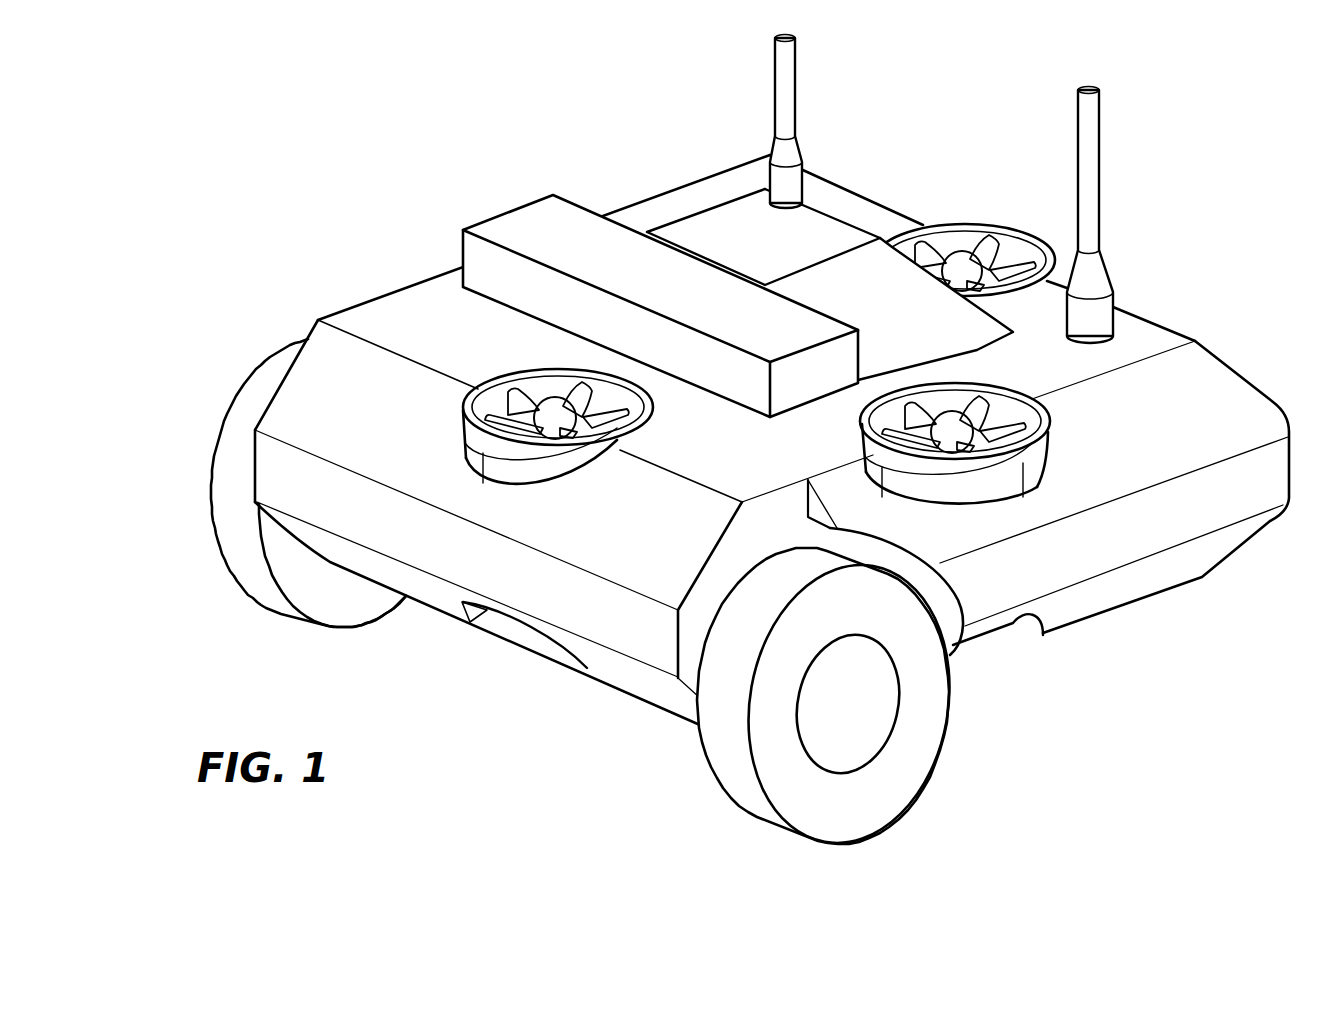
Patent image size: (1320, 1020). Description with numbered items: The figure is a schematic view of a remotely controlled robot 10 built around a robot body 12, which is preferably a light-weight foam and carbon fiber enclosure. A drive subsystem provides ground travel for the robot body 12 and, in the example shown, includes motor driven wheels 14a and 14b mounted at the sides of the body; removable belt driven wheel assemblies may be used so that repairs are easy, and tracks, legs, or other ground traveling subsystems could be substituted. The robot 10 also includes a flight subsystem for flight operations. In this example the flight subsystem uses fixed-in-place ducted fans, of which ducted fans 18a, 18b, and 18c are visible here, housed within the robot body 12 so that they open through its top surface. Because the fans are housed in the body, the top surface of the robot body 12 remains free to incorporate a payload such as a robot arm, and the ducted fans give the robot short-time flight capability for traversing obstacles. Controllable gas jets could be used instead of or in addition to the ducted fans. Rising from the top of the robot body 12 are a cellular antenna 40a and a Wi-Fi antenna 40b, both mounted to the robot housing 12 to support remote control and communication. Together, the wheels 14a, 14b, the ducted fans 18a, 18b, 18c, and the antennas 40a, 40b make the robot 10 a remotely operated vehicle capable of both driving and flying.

The remotely controlled robot 10 is at (710, 447).
The robot body 12 is at (1217, 377).
The motor driven wheel 14a is at (716, 757).
The motor driven wheel 14b is at (232, 527).
The ducted fan 18a is at (538, 388).
The ducted fan 18b is at (993, 402).
The ducted fan 18c is at (951, 240).
The cellular antenna 40a is at (783, 62).
The Wi-Fi antenna 40b is at (1093, 105).